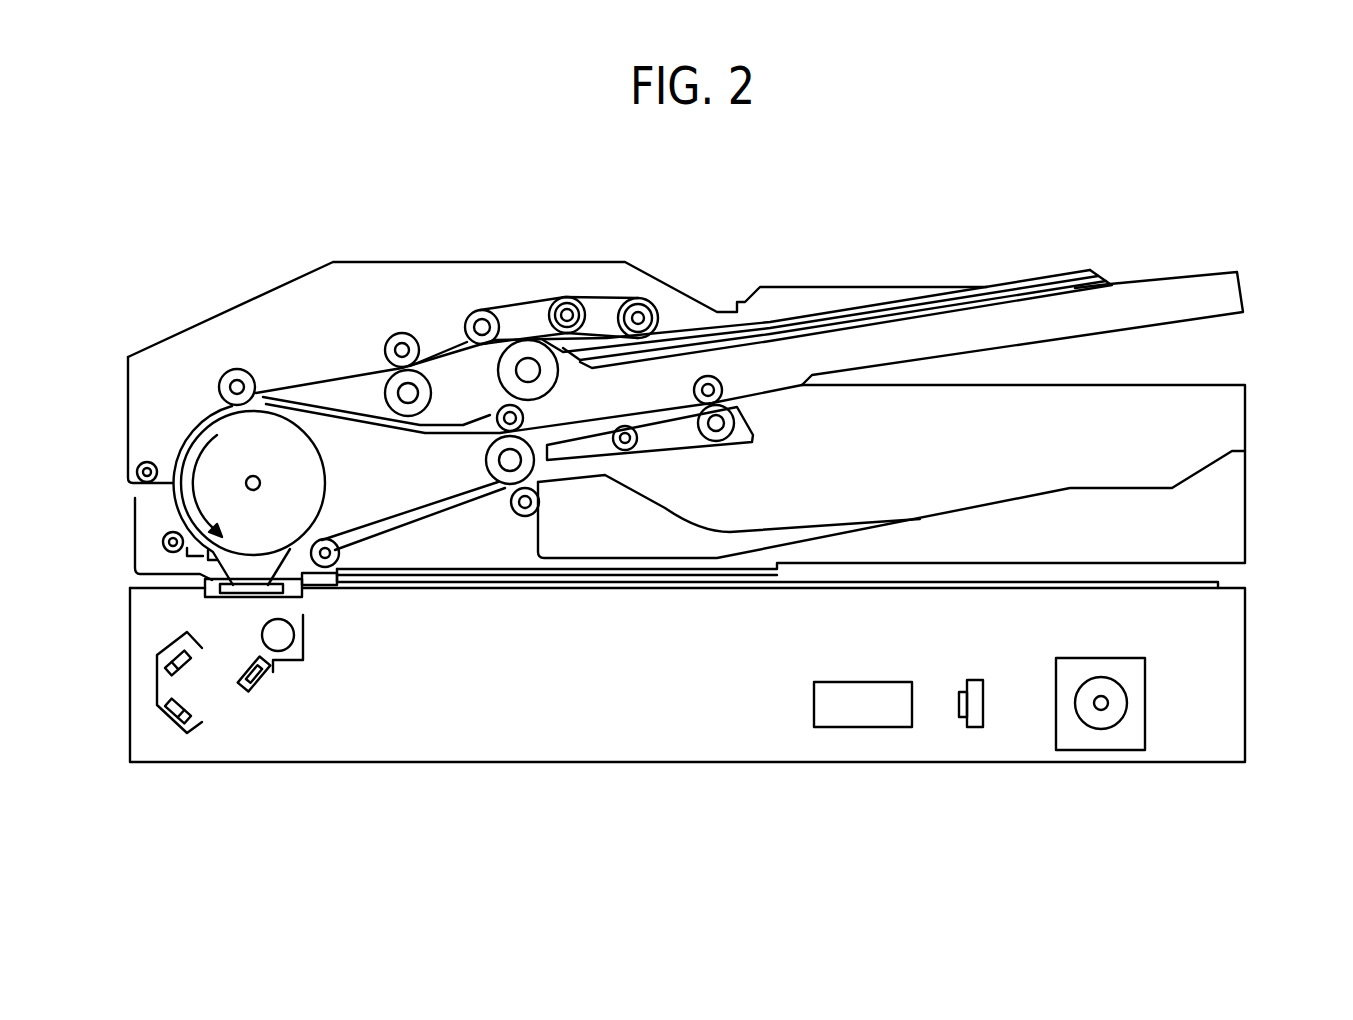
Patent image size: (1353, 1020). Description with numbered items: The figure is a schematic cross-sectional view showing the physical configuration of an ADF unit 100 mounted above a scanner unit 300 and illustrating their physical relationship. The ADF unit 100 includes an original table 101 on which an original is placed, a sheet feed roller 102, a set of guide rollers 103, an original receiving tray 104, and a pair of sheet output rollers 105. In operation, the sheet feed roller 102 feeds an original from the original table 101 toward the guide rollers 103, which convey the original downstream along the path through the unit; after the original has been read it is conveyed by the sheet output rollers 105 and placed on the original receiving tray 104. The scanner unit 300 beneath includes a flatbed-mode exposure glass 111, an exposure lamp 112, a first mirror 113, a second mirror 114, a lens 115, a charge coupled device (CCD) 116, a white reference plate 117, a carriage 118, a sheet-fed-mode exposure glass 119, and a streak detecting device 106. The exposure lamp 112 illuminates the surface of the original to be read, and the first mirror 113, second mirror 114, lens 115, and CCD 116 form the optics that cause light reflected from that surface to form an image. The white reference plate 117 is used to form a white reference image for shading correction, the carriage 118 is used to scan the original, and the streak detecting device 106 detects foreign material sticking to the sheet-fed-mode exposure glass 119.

The ADF unit 100 is at (1245, 417).
The original table 101 is at (905, 286).
The sheet feed roller 102 is at (646, 290).
The guide rollers 103 is at (190, 414).
The original receiving tray 104 is at (775, 533).
The sheet output rollers 105 is at (486, 462).
The streak detecting device 106 is at (207, 588).
The flatbed-mode exposure glass 111 is at (1145, 590).
The exposure lamp 112 is at (285, 640).
The first mirror 113 is at (262, 673).
The second mirror 114 is at (178, 727).
The lens 115 is at (882, 682).
The charge coupled device (CCD) 116 is at (980, 680).
The white reference plate 117 is at (327, 585).
The carriage 118 is at (294, 663).
The sheet-fed-mode exposure glass 119 is at (248, 593).
The scanner unit 300 is at (1245, 622).